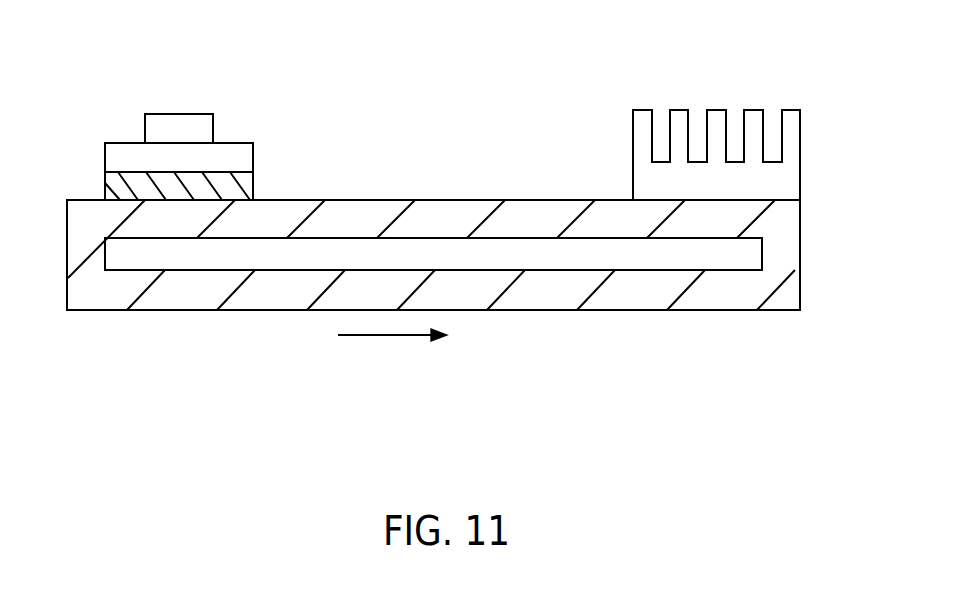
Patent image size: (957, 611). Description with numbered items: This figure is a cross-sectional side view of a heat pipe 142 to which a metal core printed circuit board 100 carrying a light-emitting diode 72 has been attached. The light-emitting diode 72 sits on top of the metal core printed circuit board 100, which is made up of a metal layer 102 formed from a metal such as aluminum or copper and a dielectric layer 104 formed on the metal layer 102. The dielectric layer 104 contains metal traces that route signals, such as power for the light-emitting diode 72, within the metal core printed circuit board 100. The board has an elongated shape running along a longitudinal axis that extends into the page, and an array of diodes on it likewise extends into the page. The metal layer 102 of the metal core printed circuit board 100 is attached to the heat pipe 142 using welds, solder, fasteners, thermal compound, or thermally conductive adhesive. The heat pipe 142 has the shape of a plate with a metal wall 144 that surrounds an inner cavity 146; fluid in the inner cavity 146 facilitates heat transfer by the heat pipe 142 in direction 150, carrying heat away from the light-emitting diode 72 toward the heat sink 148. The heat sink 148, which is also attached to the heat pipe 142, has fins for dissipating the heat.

The light-emitting diode 72 is at (205, 127).
The metal core printed circuit board 100 is at (181, 165).
The metal layer 102 is at (240, 187).
The dielectric layer 104 is at (247, 157).
The heat pipe 142 is at (475, 291).
The wall 144 is at (648, 293).
The inner cavity 146 is at (558, 258).
The heat sink 148 is at (790, 137).
The direction 150 is at (387, 337).